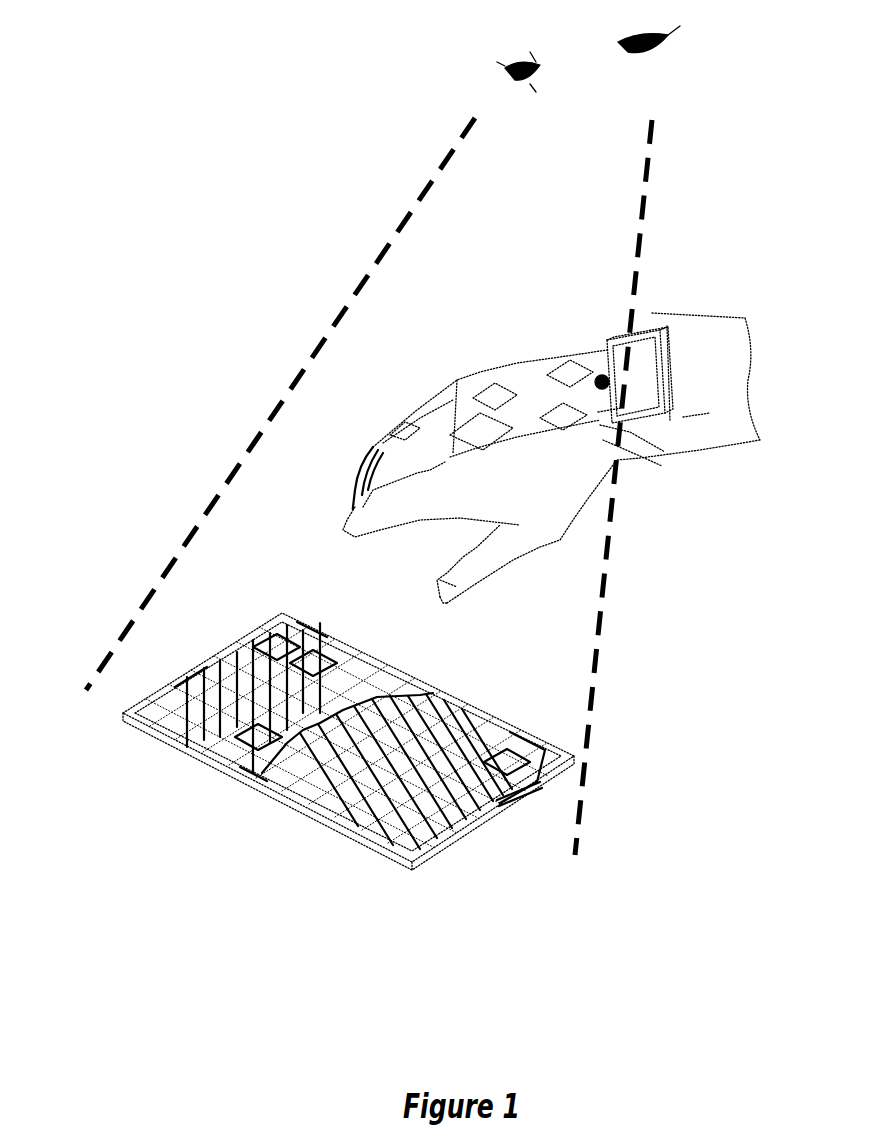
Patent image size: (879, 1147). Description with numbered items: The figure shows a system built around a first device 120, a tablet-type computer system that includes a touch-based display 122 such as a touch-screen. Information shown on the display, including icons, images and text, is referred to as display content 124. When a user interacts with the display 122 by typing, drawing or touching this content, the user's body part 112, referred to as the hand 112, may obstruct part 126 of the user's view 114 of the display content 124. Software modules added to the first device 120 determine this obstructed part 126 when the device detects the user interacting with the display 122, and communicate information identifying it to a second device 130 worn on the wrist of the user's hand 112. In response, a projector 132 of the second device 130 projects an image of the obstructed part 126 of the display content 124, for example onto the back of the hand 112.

The body part 112 is at (460, 378).
The user's view 114 is at (345, 302).
The first device 120 is at (197, 760).
The touch-based display 122 is at (367, 650).
The display content 124 is at (262, 632).
The obstructed part 126 is at (457, 705).
The second device 130 is at (648, 323).
The projector 132 is at (600, 375).